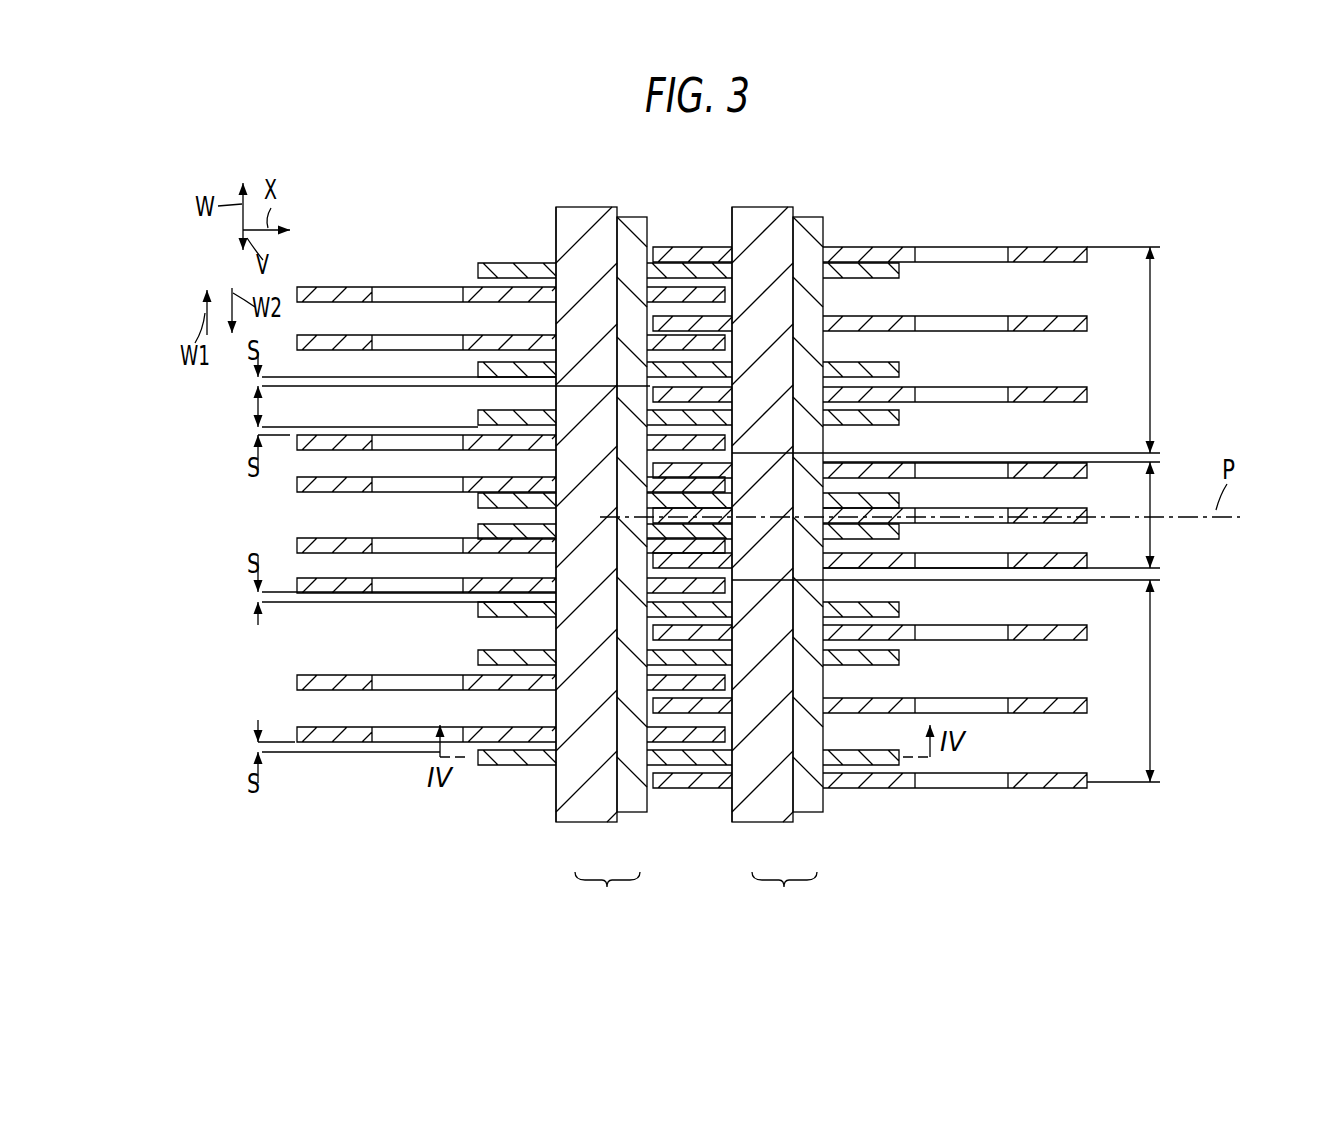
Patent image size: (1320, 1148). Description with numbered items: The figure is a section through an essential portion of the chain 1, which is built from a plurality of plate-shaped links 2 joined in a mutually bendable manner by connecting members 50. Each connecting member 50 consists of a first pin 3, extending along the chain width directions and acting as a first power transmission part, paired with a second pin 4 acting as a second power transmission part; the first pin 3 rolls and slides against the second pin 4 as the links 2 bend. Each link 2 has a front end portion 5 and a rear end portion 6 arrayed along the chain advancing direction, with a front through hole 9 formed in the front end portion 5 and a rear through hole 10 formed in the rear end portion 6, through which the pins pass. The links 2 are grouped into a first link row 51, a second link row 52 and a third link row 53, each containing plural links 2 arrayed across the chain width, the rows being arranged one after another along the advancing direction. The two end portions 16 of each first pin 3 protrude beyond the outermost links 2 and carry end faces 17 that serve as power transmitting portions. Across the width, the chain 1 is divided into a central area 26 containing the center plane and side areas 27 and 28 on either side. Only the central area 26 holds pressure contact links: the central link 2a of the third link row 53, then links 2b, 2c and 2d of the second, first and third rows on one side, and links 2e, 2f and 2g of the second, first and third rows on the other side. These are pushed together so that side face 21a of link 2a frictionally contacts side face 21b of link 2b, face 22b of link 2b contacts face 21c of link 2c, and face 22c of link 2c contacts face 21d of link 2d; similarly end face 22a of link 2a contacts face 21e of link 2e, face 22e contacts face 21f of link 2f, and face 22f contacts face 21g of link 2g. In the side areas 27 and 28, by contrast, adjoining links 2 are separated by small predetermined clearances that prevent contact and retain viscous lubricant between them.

The chain 1 is at (956, 226).
The link 2 is at (1062, 247).
The pressure contact link 2a is at (1090, 512).
The pressure contact link 2b is at (899, 502).
The pressure contact link 2c is at (735, 485).
The pressure contact link 2d is at (1090, 462).
The pressure contact link 2e is at (899, 535).
The pressure contact link 2f is at (728, 547).
The pressure contact link 2g is at (1090, 553).
The first pin 3 is at (583, 824).
The second pin 4 is at (633, 813).
The front end portion 5 is at (725, 686).
The rear end portion 6 is at (478, 657).
The front through hole 9 is at (642, 682).
The rear through hole 10 is at (378, 740).
The end portion of first pin 16 is at (556, 240).
The end face 17 is at (593, 207).
The side face of link 2a 21a is at (887, 503).
The side face of link 2b 21b is at (857, 514).
The side face of link 2c 21c is at (713, 482).
The side face of link 2d 21d is at (690, 483).
The side face of link 2e 21e is at (845, 522).
The side face of link 2f 21f is at (725, 586).
The side face of link 2g 21g is at (680, 578).
The other end face of link 2a 22a is at (905, 545).
The other side face of link 2b 22b is at (742, 497).
The other side face of link 2c 22c is at (653, 470).
The other side face of link 2e 22e is at (680, 560).
The other side face of link 2f 22f is at (670, 600).
The central area 26 is at (1168, 540).
The side area 27 is at (1168, 352).
The side area 28 is at (1168, 680).
The connecting member 50 is at (696, 889).
The first link row 51 is at (372, 762).
The second link row 52 is at (497, 785).
The third link row 53 is at (856, 812).